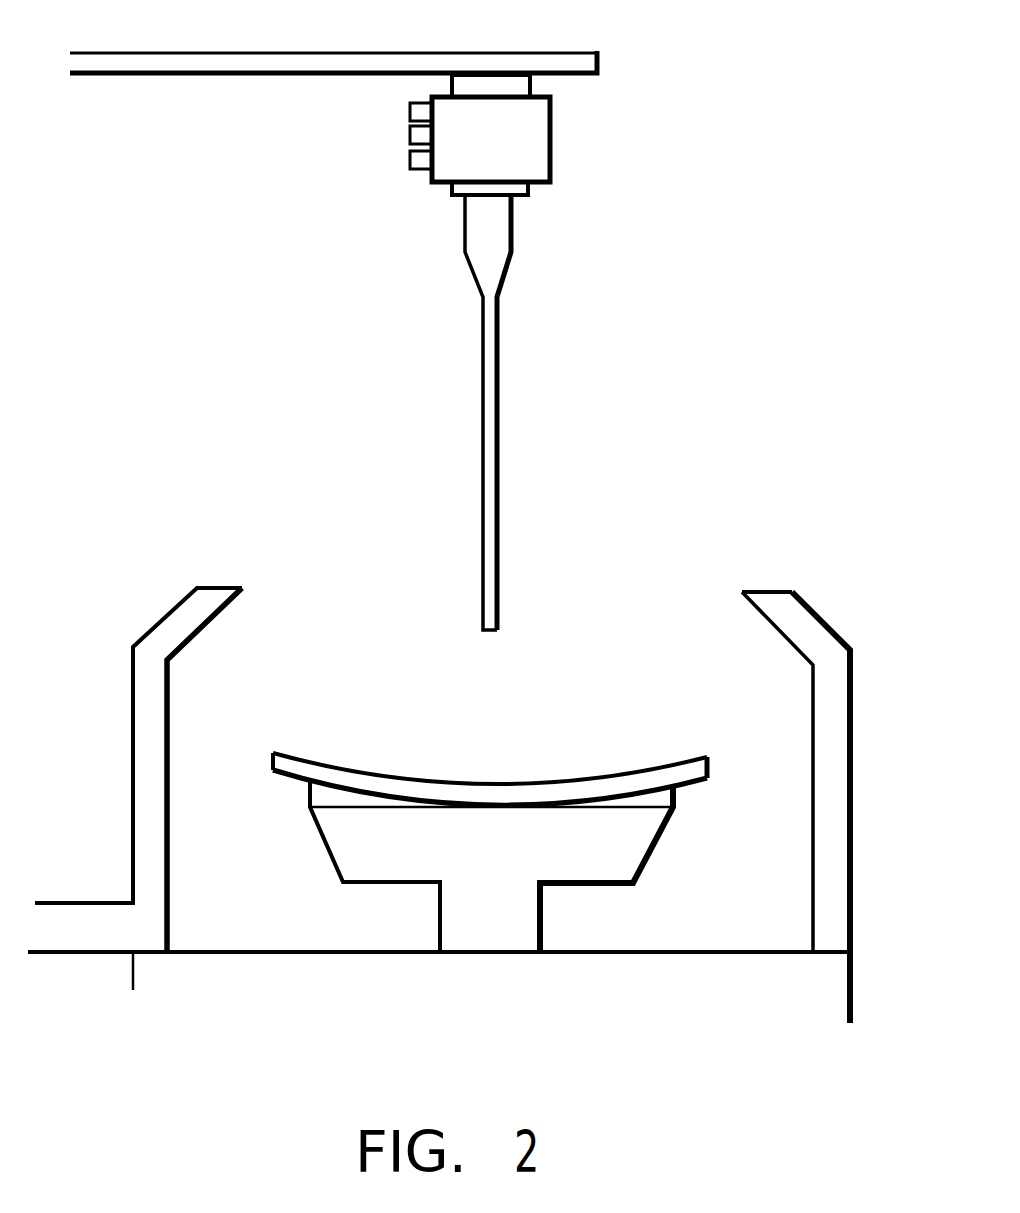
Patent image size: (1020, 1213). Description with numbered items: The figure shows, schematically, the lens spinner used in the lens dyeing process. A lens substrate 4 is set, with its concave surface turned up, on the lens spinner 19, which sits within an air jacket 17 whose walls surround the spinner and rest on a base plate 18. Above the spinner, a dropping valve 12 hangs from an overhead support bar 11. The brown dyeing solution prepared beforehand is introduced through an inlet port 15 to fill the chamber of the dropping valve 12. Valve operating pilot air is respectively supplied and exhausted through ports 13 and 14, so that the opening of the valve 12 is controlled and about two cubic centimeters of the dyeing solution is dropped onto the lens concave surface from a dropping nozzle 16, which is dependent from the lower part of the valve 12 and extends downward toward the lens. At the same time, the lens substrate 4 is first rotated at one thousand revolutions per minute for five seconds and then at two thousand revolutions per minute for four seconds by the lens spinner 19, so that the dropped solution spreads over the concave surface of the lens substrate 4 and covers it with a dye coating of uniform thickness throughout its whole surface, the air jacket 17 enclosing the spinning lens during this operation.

The lens substrate 4 is at (707, 778).
The support bar 11 is at (585, 52).
The dropping valve 12 is at (552, 150).
The port 13 is at (410, 109).
The port 14 is at (410, 136).
The inlet port 15 is at (410, 166).
The dropping nozzle 16 is at (480, 540).
The air jacket 17 is at (168, 615).
The base plate 18 is at (439, 948).
The lens spinner 19 is at (647, 872).